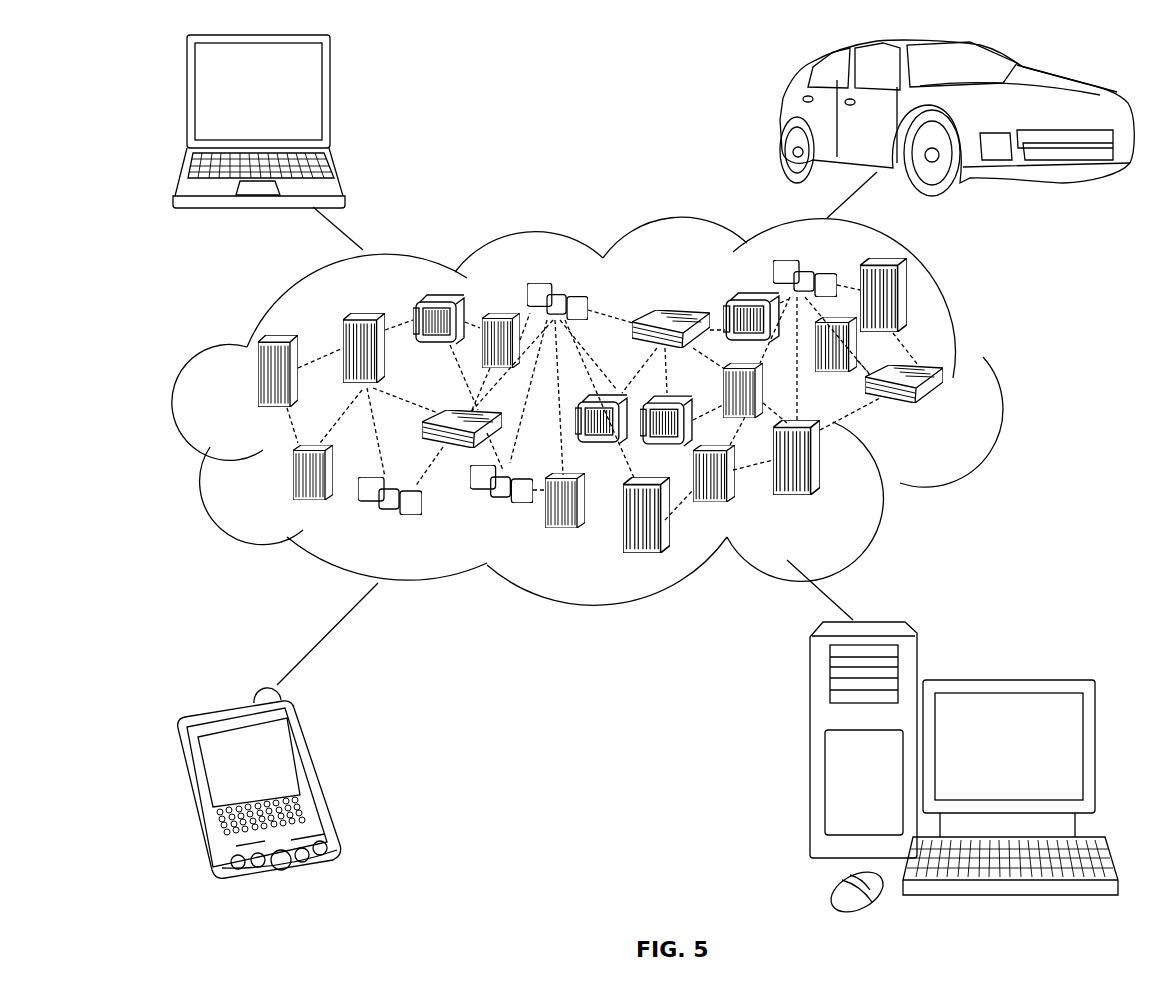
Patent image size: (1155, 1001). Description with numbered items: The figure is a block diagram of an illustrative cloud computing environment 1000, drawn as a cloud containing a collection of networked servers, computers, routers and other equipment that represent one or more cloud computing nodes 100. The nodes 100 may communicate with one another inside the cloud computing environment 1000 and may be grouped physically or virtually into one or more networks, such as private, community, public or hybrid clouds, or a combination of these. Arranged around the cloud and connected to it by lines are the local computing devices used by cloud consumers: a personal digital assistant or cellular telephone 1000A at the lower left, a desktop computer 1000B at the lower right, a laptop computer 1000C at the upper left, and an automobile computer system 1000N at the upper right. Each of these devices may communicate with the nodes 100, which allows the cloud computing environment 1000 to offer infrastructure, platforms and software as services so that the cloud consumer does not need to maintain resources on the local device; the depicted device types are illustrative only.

The laptop computer 1000C is at (332, 101).
The automobile computer system 1000N is at (780, 119).
The cloud computing environment 1000 is at (1007, 382).
The cloud computing nodes 100 is at (952, 415).
The personal digital assistant (PDA) or cellular telephone 1000A is at (320, 778).
The desktop computer 1000B is at (1005, 680).